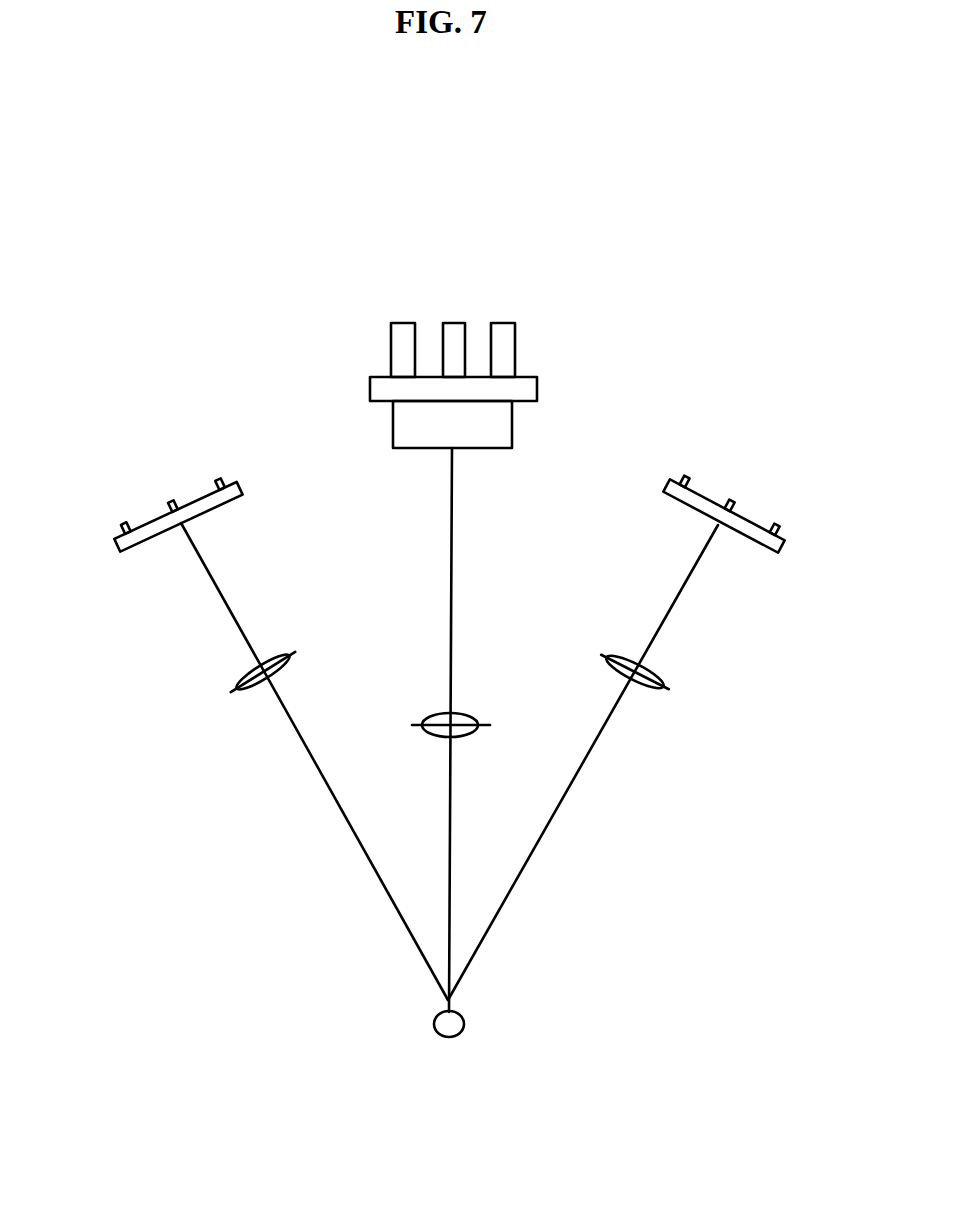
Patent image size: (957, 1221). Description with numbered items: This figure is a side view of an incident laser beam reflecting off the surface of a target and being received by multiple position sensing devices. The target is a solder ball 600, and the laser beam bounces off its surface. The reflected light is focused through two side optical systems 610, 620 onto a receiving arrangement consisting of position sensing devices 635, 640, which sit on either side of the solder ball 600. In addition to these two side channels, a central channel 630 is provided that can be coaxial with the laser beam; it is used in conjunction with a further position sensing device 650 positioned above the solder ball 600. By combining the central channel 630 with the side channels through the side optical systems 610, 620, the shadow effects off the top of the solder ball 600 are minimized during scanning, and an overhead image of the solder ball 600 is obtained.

The solder ball 600 is at (436, 1034).
The side optical system 610 is at (238, 682).
The side optical system 620 is at (668, 681).
The central channel 630 is at (452, 566).
The position sensing device 635 is at (115, 548).
The position sensing device 640 is at (788, 548).
The position sensing device 650 is at (370, 383).